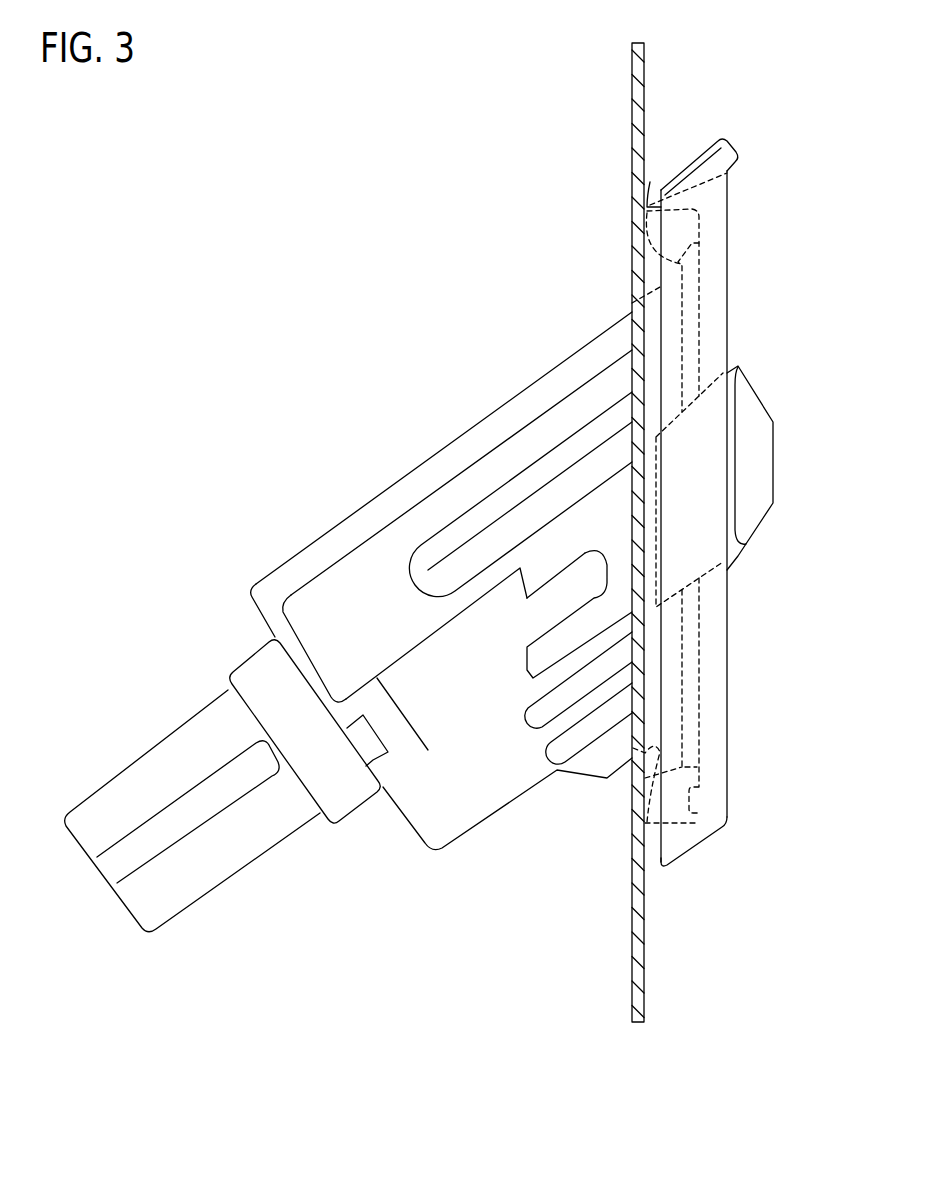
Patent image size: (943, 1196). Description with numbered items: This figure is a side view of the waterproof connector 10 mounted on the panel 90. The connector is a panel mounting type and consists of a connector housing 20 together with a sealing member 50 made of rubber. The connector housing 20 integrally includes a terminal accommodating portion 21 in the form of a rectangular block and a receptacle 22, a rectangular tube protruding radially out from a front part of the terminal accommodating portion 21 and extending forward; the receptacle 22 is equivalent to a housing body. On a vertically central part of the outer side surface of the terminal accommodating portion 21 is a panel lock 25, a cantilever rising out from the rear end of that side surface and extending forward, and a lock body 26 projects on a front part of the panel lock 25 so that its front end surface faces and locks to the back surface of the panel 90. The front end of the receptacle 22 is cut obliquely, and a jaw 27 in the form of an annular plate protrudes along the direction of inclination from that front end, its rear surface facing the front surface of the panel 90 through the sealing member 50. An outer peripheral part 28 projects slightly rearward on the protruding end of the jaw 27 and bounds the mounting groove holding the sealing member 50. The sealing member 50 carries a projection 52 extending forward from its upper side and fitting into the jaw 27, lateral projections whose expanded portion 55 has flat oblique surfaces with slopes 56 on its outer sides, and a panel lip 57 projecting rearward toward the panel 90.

The waterproof connector 10 is at (372, 344).
The connector housing 20 is at (248, 590).
The terminal accommodating portion 21 is at (230, 677).
The receptacle 22 is at (461, 440).
The panel lock 25 is at (448, 640).
The lock body 26 is at (618, 521).
The jaw 27 is at (728, 766).
The outer peripheral part 28 is at (677, 850).
The sealing member 50 is at (661, 703).
The projection 52 is at (720, 146).
The expanded portion 55 is at (774, 449).
The slope 56 is at (759, 513).
The panel lip 57 is at (650, 216).
The panel 90 is at (632, 92).